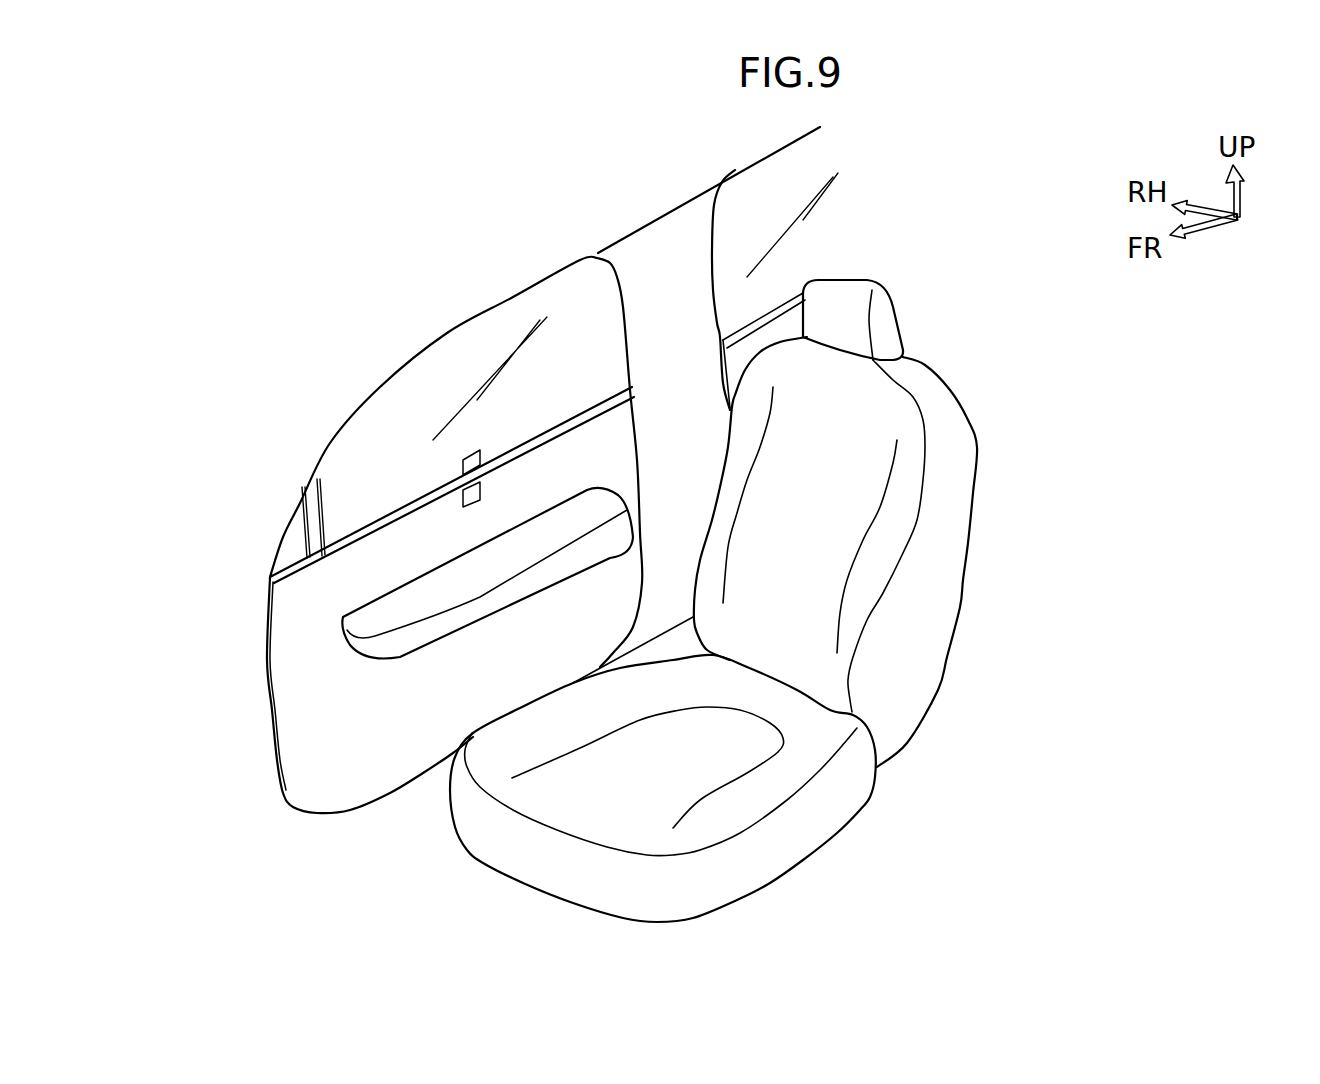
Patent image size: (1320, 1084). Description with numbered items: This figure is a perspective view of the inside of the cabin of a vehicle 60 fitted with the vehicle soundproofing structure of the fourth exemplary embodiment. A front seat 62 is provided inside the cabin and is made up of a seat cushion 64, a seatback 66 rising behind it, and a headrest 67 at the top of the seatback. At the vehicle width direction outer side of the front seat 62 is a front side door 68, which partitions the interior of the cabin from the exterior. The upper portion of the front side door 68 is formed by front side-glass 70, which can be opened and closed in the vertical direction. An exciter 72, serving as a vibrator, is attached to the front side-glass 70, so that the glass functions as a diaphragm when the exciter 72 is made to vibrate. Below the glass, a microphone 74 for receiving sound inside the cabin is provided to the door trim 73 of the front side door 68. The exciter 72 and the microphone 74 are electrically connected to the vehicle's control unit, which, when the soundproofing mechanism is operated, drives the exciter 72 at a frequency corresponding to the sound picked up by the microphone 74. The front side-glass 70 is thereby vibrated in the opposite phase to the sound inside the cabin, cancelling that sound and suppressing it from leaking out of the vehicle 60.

The vehicle 60 is at (347, 219).
The front seat 62 is at (747, 613).
The seat cushion 64 is at (793, 847).
The seatback 66 is at (912, 677).
The headrest 67 is at (887, 323).
The front side door 68 is at (267, 668).
The front side-glass 70 is at (507, 333).
The exciter 72 is at (463, 457).
The door trim 73 is at (273, 603).
The microphone 74 is at (463, 497).